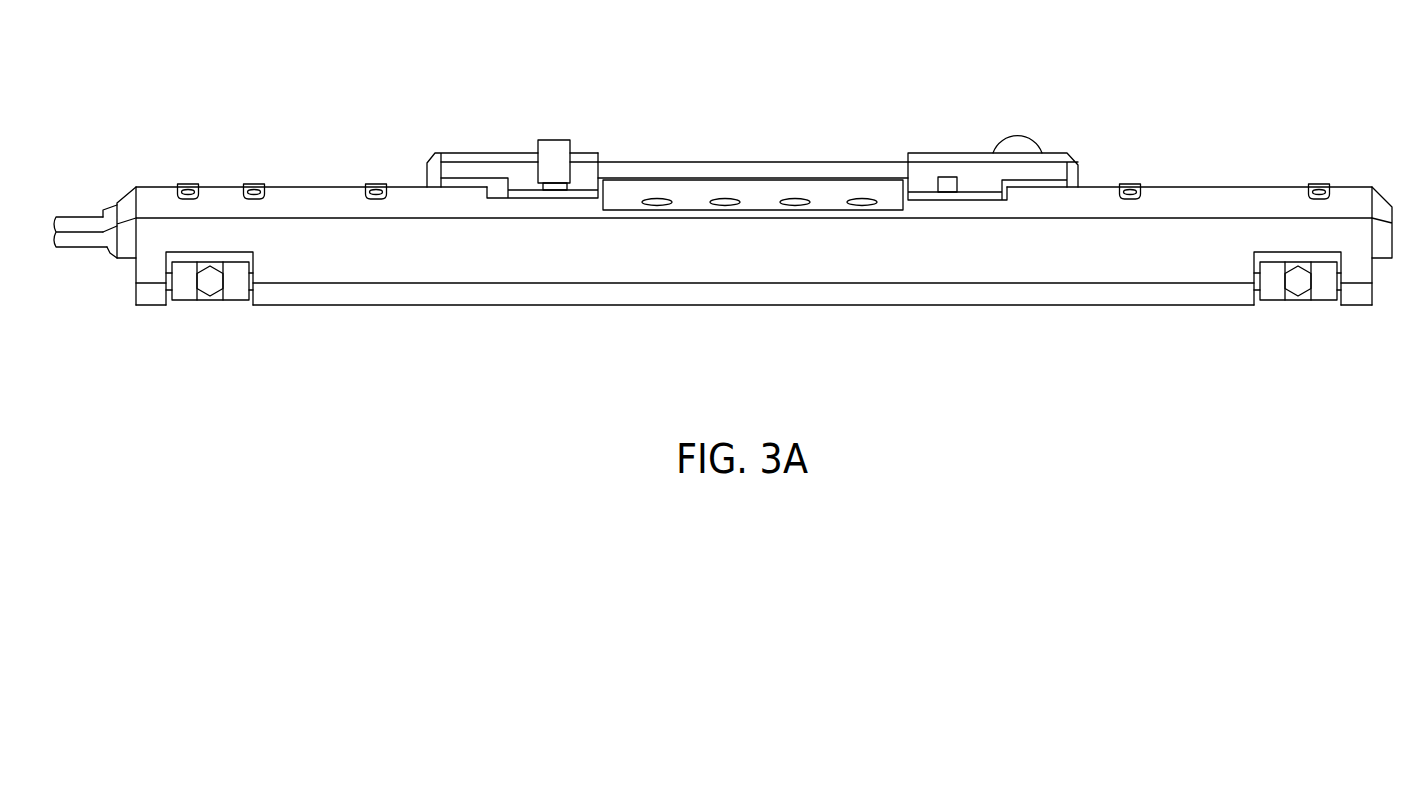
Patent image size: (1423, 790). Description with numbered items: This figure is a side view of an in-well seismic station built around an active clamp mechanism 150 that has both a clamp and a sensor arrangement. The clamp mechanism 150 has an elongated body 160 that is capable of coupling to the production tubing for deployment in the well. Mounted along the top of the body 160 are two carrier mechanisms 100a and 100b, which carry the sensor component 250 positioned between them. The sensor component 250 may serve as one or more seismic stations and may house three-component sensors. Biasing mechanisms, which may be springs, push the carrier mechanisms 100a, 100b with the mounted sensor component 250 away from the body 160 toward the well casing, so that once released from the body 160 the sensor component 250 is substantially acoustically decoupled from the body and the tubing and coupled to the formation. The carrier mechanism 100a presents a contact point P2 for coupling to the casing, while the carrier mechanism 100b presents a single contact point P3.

The clamp mechanism 150 is at (334, 57).
The body 160 is at (1225, 187).
The carrier mechanism 100a is at (487, 140).
The contact point P2 is at (552, 140).
The sensor component 250 is at (753, 162).
The carrier mechanism 100b is at (944, 142).
The contact point P3 is at (1017, 135).